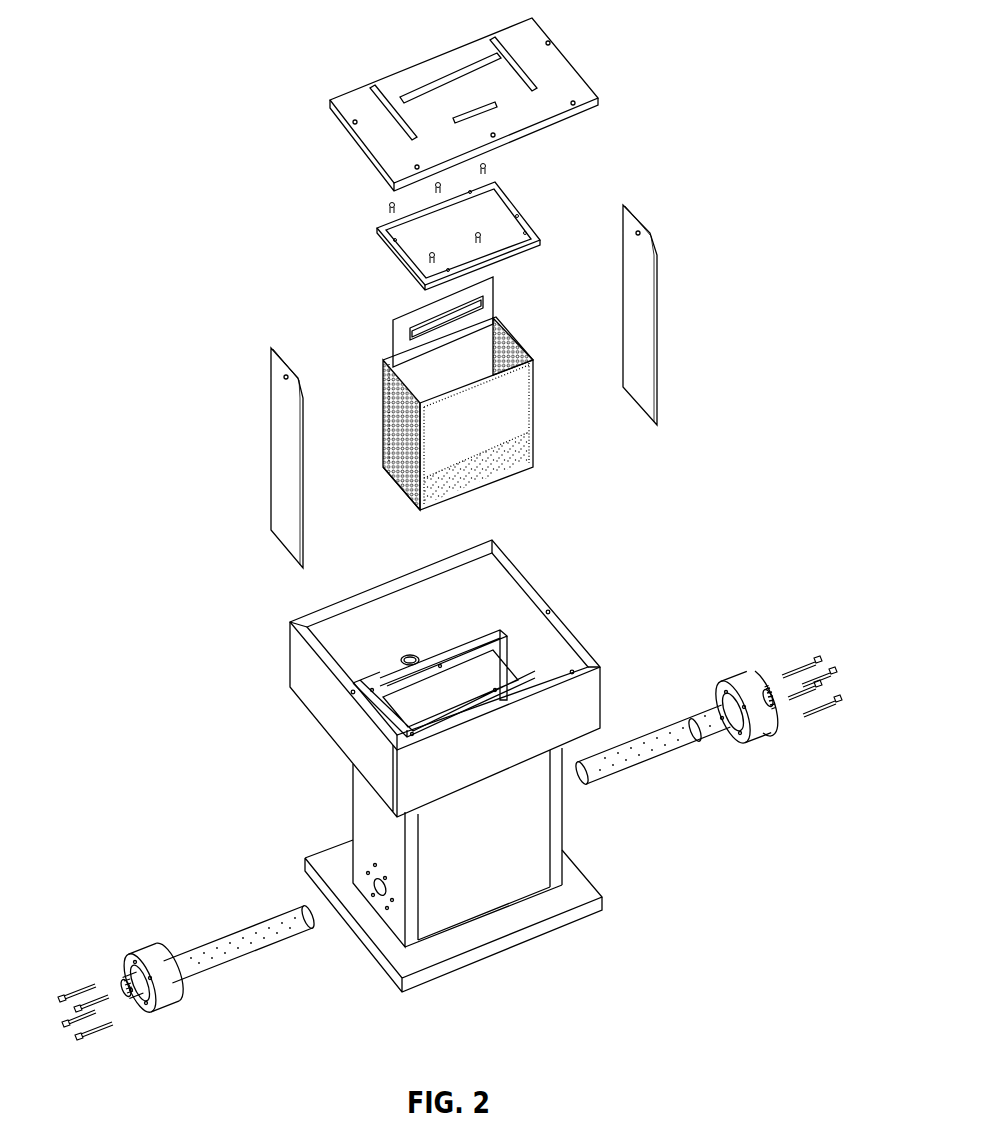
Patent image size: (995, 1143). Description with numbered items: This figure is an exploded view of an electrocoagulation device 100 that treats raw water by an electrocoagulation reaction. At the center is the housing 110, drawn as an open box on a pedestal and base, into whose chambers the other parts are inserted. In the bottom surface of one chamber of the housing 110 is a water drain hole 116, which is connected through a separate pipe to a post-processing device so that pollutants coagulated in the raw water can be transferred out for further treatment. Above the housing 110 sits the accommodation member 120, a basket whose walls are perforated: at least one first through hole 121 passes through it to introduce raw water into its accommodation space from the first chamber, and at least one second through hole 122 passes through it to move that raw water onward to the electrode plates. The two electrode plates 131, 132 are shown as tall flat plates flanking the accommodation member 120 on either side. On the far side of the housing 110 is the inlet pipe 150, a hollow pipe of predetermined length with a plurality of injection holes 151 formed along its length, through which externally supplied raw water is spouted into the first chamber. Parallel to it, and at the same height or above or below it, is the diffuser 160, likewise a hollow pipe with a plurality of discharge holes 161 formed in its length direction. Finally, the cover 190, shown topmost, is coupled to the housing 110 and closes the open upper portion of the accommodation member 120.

The electrocoagulation device 100 is at (283, 44).
The housing 110 is at (397, 758).
The water drain hole 116 is at (408, 655).
The accommodation member 120 is at (481, 399).
The first through hole 121 is at (512, 480).
The second through hole 122 is at (505, 338).
The electrode plate 131 is at (276, 443).
The electrode plate 132 is at (658, 320).
The inlet pipe 150 is at (187, 953).
The injection holes 151 is at (260, 957).
The diffuser 160 is at (707, 727).
The discharge holes 161 is at (678, 747).
The cover 190 is at (570, 75).